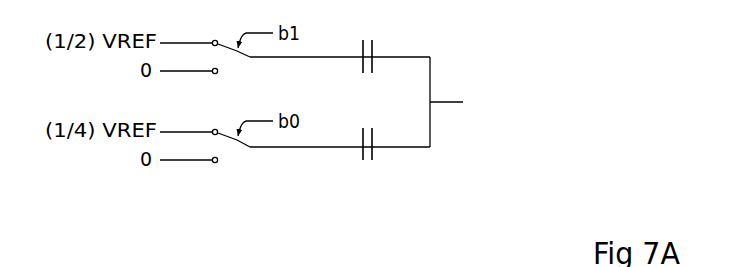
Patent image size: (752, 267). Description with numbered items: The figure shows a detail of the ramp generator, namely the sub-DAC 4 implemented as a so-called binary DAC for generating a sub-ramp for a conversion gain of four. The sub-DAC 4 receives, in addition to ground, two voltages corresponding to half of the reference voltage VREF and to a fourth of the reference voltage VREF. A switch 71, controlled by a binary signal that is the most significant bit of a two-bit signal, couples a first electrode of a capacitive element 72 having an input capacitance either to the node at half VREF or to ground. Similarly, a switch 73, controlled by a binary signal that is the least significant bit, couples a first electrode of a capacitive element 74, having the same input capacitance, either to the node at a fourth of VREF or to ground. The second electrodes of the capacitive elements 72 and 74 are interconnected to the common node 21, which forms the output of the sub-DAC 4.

The switch 71 is at (233, 60).
The capacitive element 72 is at (386, 44).
The switch 73 is at (233, 150).
The capacitive element 74 is at (386, 136).
The node 21 is at (459, 96).
The sub-DAC 4 is at (429, 185).